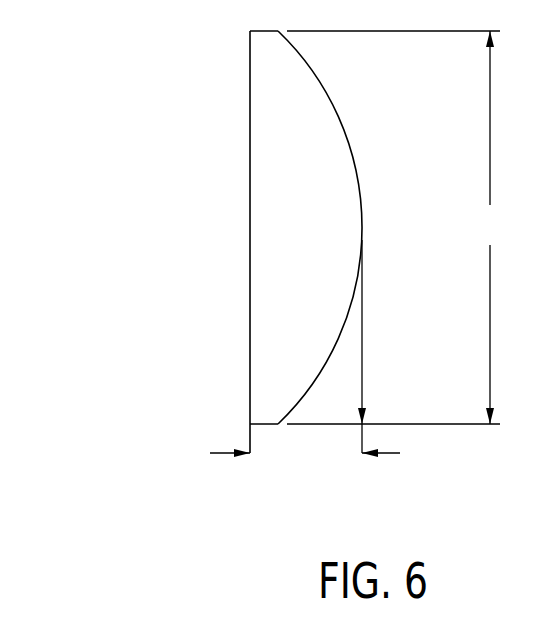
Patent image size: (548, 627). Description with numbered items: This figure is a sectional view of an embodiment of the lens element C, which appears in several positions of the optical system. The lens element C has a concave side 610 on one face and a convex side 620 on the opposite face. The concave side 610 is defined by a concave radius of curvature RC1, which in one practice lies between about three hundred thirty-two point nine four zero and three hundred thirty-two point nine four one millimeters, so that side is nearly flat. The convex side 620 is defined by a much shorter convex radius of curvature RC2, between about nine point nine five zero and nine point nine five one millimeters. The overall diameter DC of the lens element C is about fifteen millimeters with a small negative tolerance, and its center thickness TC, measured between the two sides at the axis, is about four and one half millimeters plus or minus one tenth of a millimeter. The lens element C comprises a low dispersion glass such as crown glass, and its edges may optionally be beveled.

The concave side 610 is at (236, 69).
The convex side 620 is at (332, 68).
The radius of curvature of concave side RC1 is at (250, 262).
The radius of curvature of convex side RC2 is at (350, 146).
The diameter DC is at (489, 227).
The center thickness TC is at (305, 365).
The lens element C is at (108, 238).